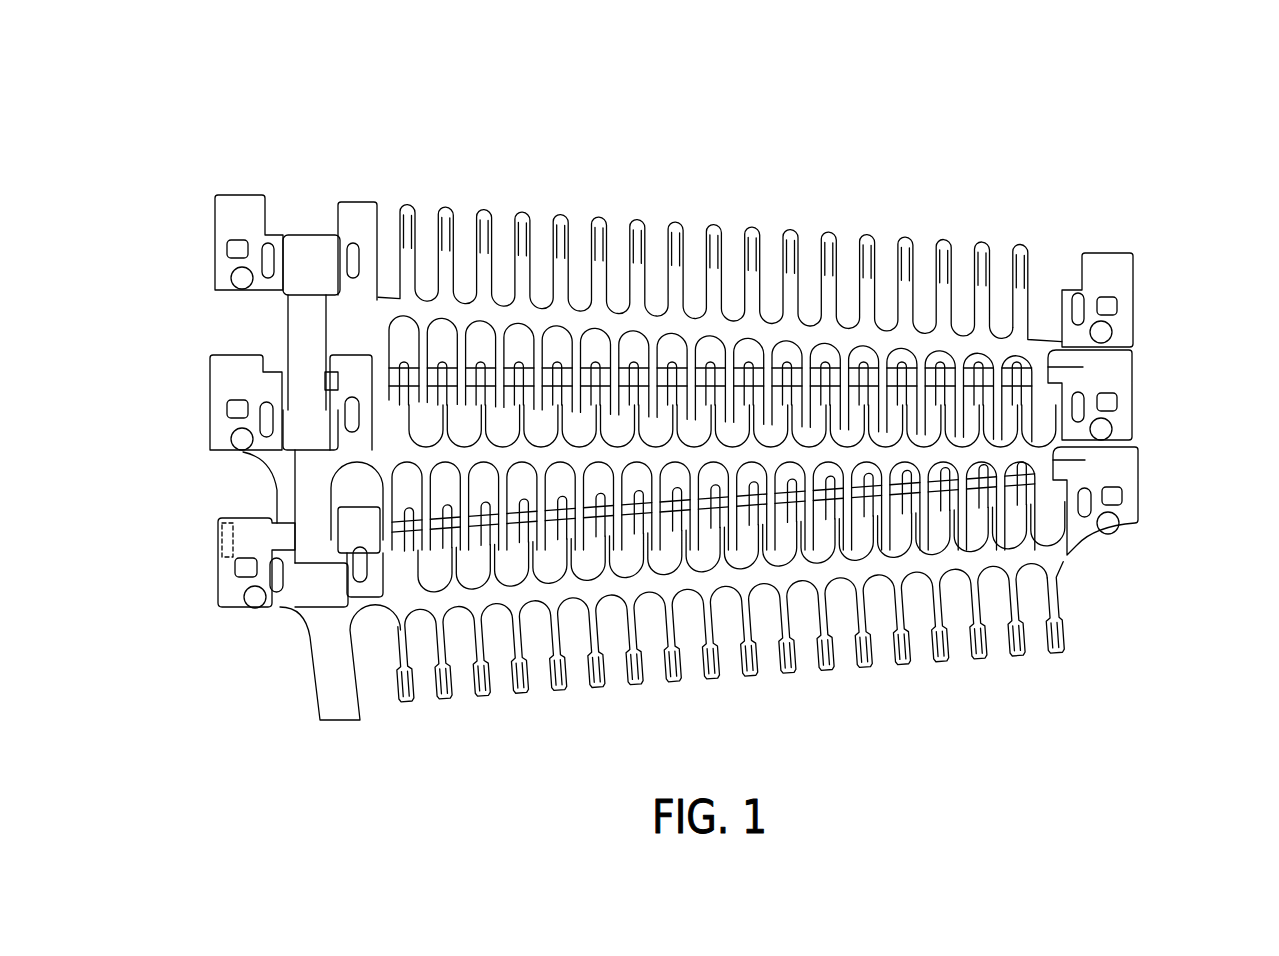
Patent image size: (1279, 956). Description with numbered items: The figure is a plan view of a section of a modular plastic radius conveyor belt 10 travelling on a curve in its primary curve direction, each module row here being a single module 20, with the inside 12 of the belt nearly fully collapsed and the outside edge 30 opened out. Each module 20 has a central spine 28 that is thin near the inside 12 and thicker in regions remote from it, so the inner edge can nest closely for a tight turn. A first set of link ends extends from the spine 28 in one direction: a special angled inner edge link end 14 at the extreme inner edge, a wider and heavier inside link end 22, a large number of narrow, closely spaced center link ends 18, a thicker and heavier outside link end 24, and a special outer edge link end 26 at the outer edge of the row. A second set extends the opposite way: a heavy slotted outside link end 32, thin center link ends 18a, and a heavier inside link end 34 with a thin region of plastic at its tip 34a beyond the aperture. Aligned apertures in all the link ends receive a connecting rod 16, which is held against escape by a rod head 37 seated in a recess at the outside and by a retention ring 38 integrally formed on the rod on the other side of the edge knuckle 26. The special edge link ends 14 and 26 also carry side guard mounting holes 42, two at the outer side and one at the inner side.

The modular plastic radius conveyor belt 10 is at (871, 155).
The inside of the belt 12 is at (1181, 140).
The inner edge link end 14 is at (1122, 265).
The connecting rod 16 is at (1063, 373).
The center link ends 18 is at (445, 212).
The center link ends of the second set 18a is at (456, 703).
The module 20 is at (1180, 290).
The inside link end of the first set 22 is at (1022, 253).
The outside link end of the first set 24 is at (363, 203).
The outer edge link end 26 is at (240, 195).
The central spine 28 is at (365, 305).
The outside edge of the belt 30 is at (273, 100).
The outside link end of the second set 32 is at (300, 345).
The inside link end of the second set 34 is at (1060, 607).
The tip of the inside second link end 34a is at (1070, 645).
The rod head 37 is at (215, 538).
The retention ring 38 is at (270, 500).
The side guard mounting holes 42 is at (347, 270).